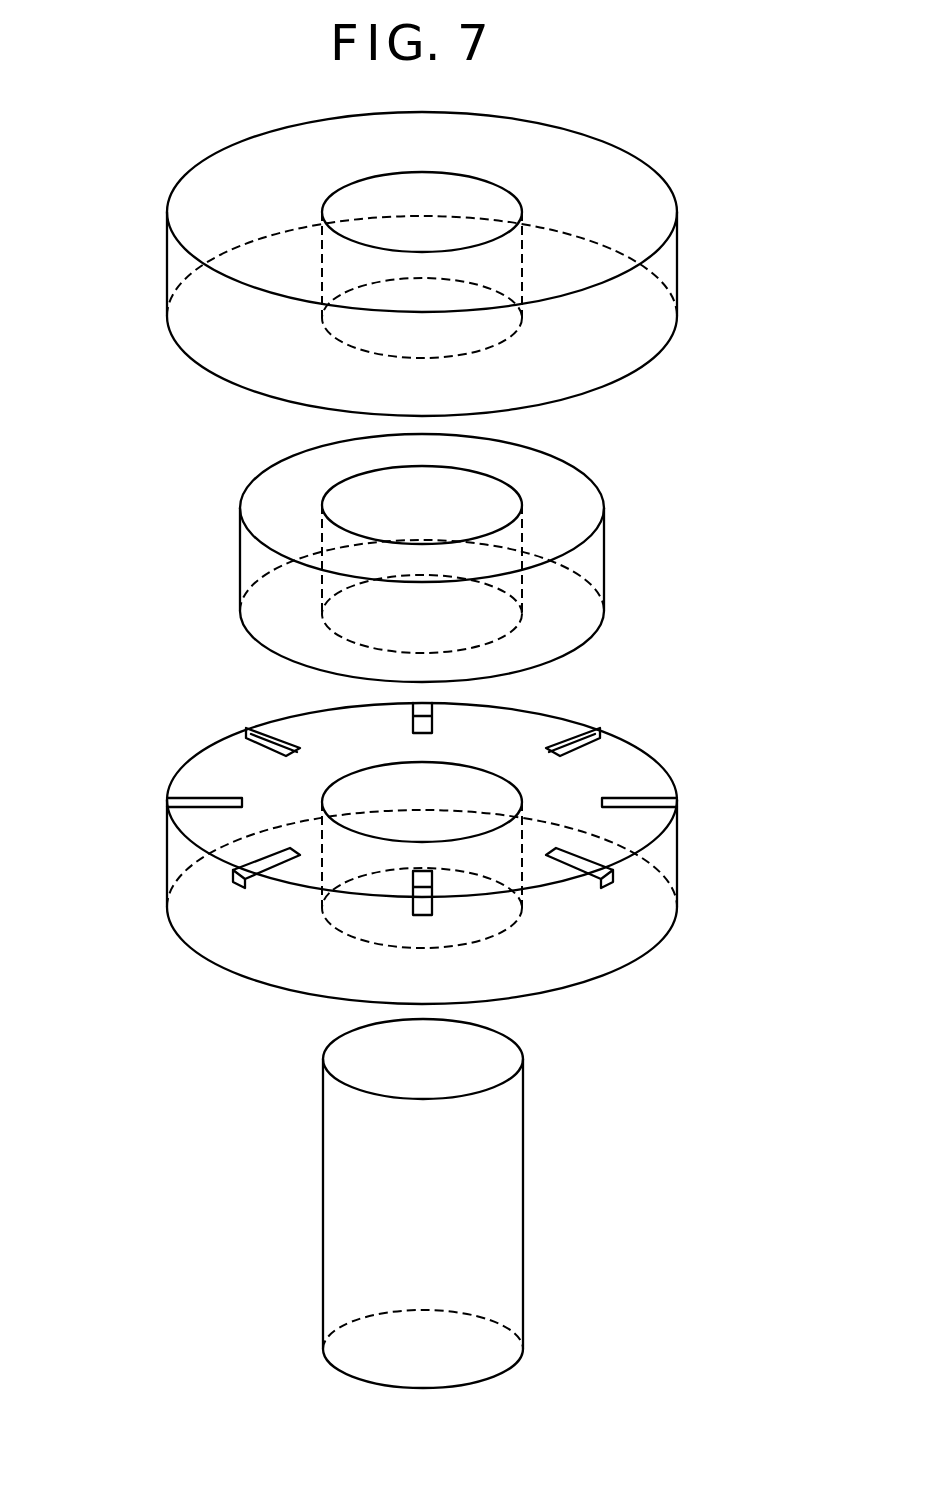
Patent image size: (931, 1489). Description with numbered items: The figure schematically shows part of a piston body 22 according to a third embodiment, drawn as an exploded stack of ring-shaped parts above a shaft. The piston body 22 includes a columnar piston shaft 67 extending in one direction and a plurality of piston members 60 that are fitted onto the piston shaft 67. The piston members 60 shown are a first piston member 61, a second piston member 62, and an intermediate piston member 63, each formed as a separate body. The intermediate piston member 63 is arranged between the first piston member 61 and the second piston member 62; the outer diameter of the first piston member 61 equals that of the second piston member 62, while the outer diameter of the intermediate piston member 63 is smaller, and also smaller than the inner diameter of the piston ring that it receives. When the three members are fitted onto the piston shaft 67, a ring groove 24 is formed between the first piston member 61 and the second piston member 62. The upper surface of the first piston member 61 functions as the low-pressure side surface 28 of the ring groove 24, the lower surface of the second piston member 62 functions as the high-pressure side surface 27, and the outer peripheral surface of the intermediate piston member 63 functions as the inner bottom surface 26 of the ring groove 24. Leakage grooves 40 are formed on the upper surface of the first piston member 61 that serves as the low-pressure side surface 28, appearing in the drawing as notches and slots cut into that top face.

The piston body 22 is at (150, 161).
The ring groove 24 is at (682, 379).
The inner bottom surface 26 is at (240, 566).
The high-pressure side surface 27 is at (203, 368).
The low-pressure side surface 28 is at (217, 770).
The leakage grooves 40 is at (572, 860).
The piston members 60 is at (462, 558).
The first piston member 61 is at (665, 857).
The second piston member 62 is at (666, 268).
The intermediate piston member 63 is at (593, 566).
The piston shaft 67 is at (523, 1182).